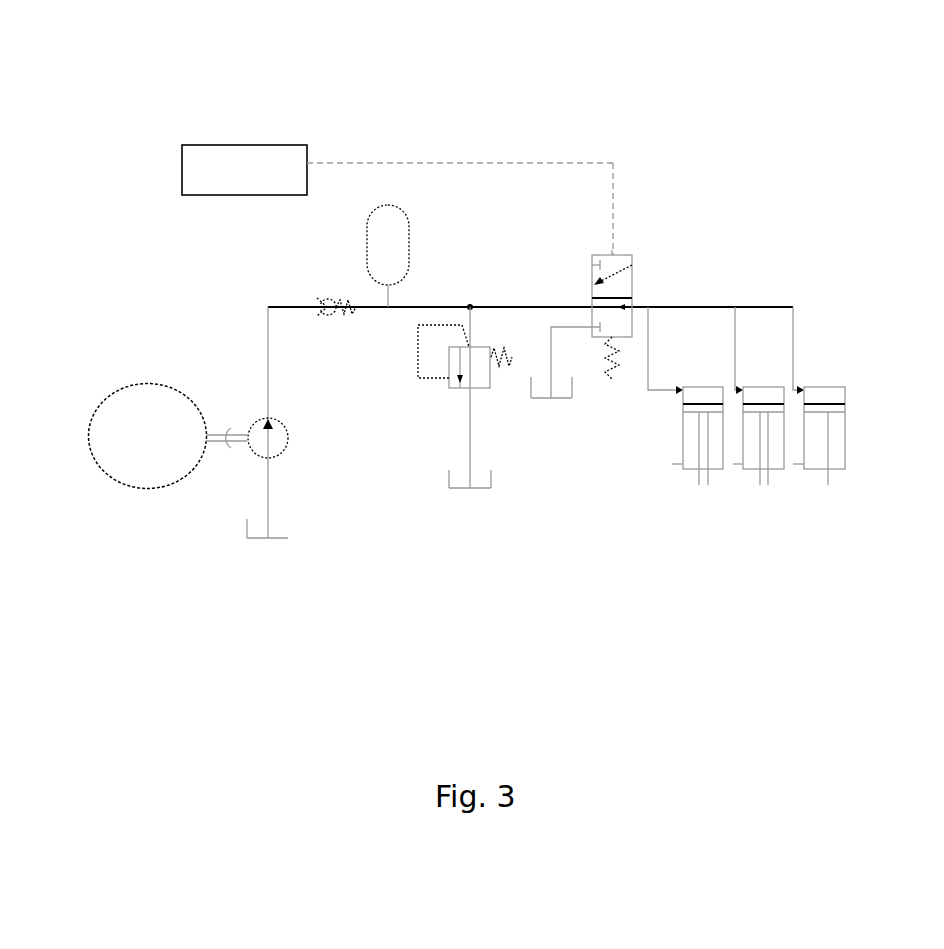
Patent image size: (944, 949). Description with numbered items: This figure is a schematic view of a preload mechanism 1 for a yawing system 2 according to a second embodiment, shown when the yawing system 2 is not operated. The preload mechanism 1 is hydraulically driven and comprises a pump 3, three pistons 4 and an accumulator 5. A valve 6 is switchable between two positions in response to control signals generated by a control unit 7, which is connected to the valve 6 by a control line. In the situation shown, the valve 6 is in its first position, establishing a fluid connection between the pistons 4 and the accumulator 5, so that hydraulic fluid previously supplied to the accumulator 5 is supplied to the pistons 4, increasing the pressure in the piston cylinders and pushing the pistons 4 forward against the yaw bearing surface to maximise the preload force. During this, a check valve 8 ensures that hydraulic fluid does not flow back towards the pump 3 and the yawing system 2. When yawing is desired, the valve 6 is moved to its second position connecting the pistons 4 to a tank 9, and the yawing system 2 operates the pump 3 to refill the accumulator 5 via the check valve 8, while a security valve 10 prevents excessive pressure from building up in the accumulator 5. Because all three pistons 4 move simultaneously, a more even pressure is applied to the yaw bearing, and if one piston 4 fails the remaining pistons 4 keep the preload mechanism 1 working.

The preload mechanism 1 is at (716, 84).
The yawing system 2 is at (90, 425).
The pump 3 is at (283, 455).
The piston 4 is at (712, 470).
The accumulator 5 is at (408, 243).
The valve 6 is at (630, 275).
The control unit 7 is at (203, 145).
The check valve 8 is at (318, 300).
The tank 9 is at (562, 397).
The security valve 10 is at (452, 378).